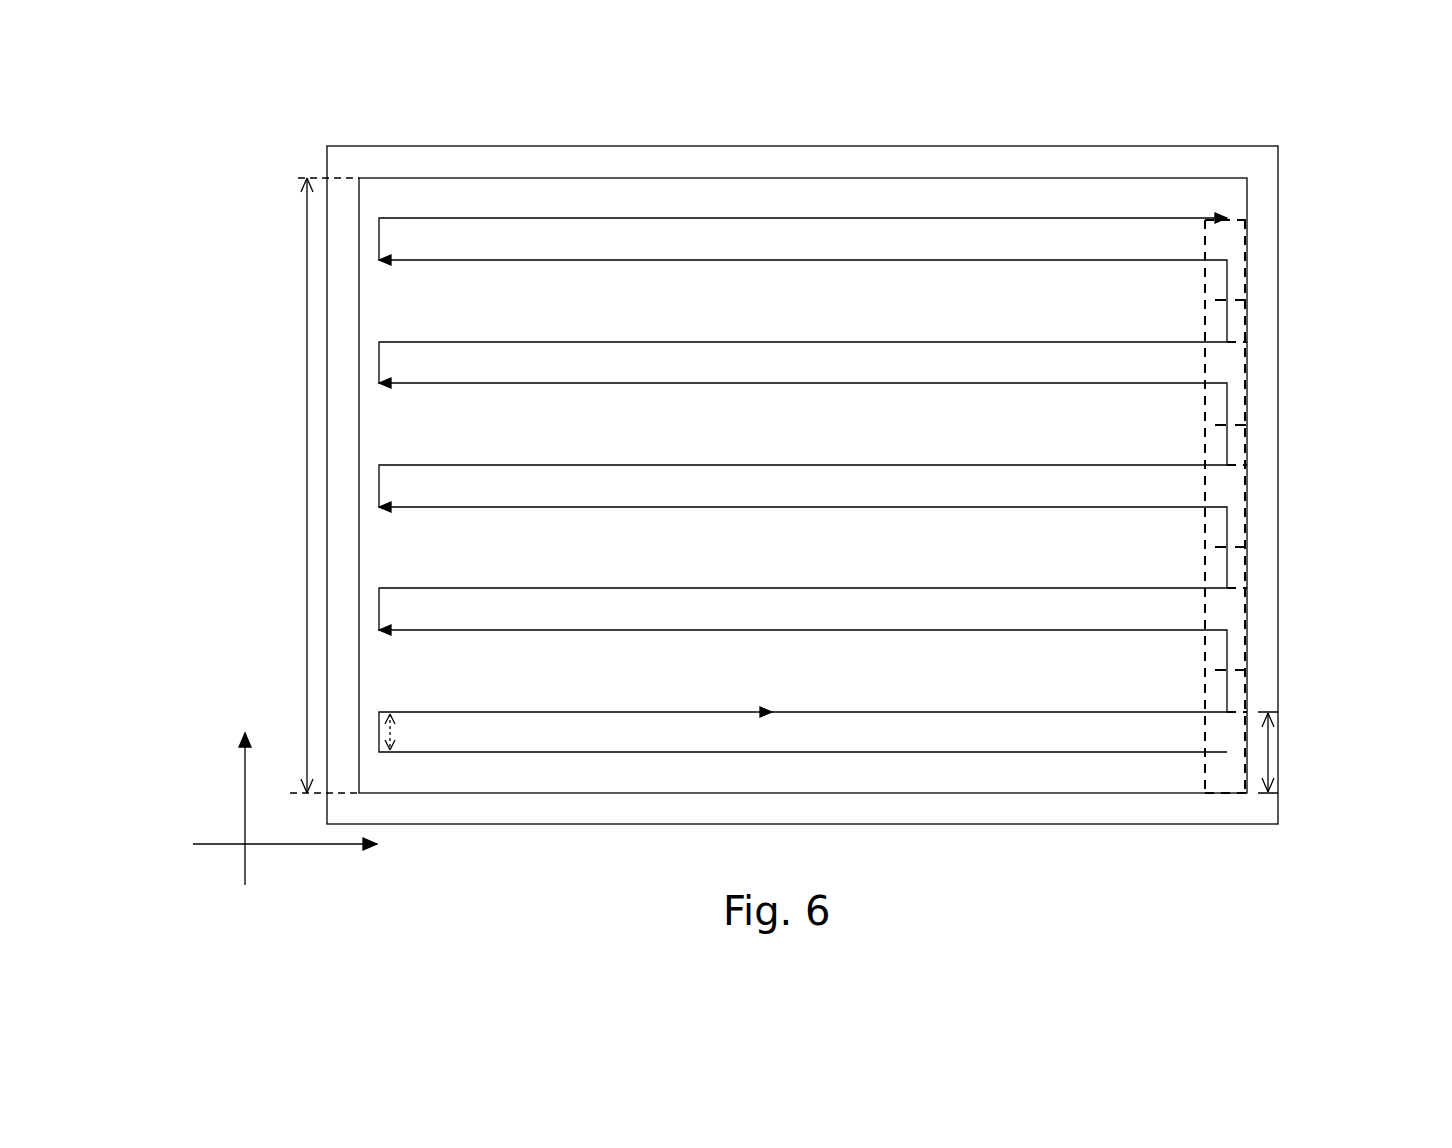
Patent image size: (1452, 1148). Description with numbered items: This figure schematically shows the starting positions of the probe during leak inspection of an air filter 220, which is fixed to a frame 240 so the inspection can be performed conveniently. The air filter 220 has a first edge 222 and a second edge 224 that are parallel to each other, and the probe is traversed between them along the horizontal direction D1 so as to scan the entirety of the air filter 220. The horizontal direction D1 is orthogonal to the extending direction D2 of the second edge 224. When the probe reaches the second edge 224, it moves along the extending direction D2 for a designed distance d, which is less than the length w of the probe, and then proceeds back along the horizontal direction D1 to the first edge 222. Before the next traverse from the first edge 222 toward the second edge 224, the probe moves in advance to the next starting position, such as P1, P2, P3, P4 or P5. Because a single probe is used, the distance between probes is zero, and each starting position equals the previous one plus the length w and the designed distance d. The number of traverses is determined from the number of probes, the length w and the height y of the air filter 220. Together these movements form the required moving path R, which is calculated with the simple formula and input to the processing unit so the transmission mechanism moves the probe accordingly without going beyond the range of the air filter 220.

The frame 240 is at (360, 157).
The air filter 220 is at (1228, 197).
The first edge 222 is at (1252, 524).
The second edge 224 is at (359, 557).
The moving path R is at (675, 218).
The first starting position P1 is at (1203, 732).
The second starting position P2 is at (1203, 610).
The third starting position P3 is at (1203, 477).
The fourth starting position P4 is at (1203, 363).
The fifth starting position P5 is at (1203, 252).
The height of the air filter y is at (307, 445).
The length of the probe w is at (1268, 752).
The designed distance d is at (398, 732).
The horizontal direction D1 is at (307, 845).
The extending direction D2 is at (245, 805).